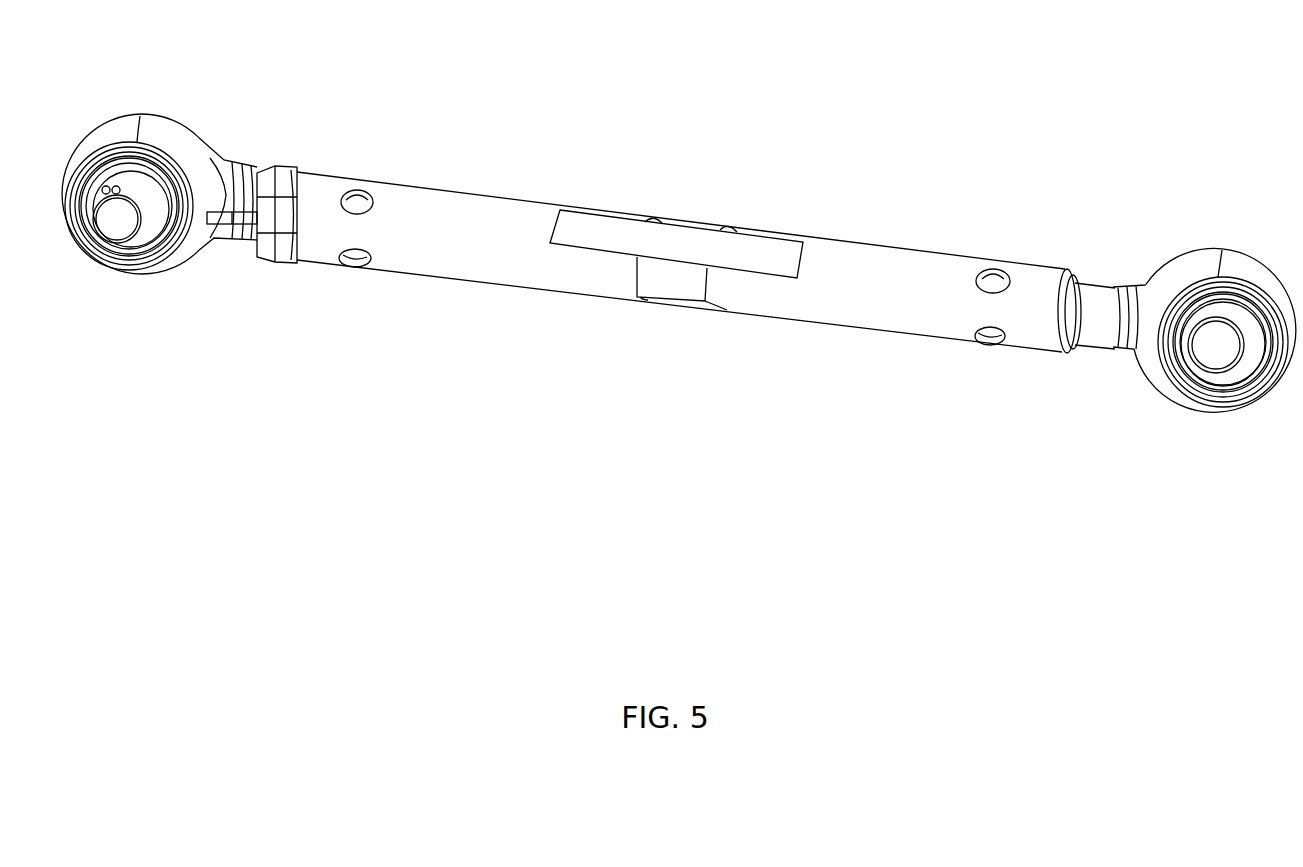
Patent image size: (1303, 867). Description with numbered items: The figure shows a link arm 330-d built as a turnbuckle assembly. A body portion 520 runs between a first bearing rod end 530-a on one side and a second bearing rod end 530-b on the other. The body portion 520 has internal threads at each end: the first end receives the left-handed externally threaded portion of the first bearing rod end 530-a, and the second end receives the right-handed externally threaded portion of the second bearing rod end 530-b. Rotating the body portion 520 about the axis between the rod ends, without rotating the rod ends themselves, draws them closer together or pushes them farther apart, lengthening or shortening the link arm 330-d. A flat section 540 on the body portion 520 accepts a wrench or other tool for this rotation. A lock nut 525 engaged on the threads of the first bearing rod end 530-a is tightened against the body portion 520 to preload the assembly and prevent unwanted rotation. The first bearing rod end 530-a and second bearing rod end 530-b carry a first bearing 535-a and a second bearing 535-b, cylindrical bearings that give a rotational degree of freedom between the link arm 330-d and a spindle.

The link arm 330-d is at (606, 72).
The first bearing rod end 530-a is at (179, 125).
The first bearing 535-a is at (145, 250).
The lock nut 525 is at (288, 170).
The body portion 520 is at (858, 242).
The flat section 540 is at (677, 297).
The second bearing rod end 530-b is at (1197, 253).
The second bearing 535-b is at (1200, 372).